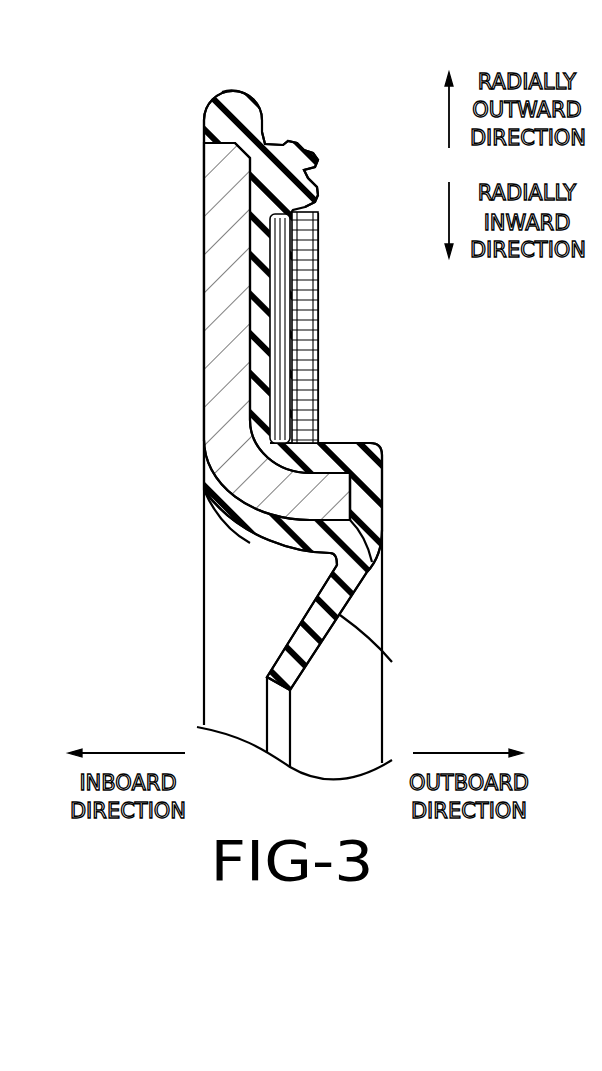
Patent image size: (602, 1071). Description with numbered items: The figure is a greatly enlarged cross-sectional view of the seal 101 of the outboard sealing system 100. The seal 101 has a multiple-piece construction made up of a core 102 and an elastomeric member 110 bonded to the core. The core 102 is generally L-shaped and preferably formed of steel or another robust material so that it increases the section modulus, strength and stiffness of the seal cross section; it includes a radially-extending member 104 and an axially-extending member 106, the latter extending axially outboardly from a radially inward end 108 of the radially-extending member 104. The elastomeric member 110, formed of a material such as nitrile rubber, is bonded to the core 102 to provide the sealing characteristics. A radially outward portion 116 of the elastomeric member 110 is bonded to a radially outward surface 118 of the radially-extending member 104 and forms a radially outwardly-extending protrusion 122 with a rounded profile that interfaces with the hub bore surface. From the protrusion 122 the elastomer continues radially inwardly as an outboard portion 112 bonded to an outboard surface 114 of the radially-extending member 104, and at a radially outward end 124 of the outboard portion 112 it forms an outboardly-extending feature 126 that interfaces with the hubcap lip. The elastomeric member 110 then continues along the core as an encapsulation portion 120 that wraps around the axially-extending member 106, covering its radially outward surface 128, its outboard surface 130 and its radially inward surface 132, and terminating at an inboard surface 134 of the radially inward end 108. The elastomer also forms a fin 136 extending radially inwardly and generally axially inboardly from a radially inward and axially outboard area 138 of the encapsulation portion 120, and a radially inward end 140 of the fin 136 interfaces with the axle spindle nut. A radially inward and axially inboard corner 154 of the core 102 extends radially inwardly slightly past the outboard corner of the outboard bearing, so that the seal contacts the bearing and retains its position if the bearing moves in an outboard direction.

The outboard sealing system 100 is at (375, 108).
The seal 101 is at (200, 228).
The core 102 is at (203, 337).
The radially-extending member 104 is at (220, 293).
The axially-extending member 106 is at (285, 541).
The radially inward end 108 is at (233, 417).
The elastomeric member 110 is at (363, 445).
The outboard portion 112 is at (258, 320).
The outboard surface 114 is at (255, 378).
The radially outward portion 116 is at (237, 110).
The radially outward surface 118 is at (278, 162).
The encapsulation portion 120 is at (247, 507).
The protrusion 122 is at (236, 92).
The radially outward end 124 is at (270, 190).
The outboardly-extending feature 126 is at (318, 157).
The radially outward surface 128 is at (307, 470).
The outboard surface 130 is at (352, 493).
The radially inward surface 132 is at (338, 525).
The inboard surface 134 is at (258, 395).
The fin 136 is at (343, 628).
The radially inward and axially outboard area 138 is at (358, 548).
The radially inward end 140 is at (290, 658).
The radially inward and axially inboard corner 154 is at (237, 463).